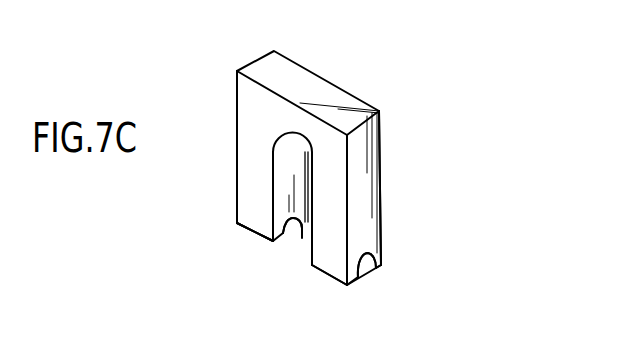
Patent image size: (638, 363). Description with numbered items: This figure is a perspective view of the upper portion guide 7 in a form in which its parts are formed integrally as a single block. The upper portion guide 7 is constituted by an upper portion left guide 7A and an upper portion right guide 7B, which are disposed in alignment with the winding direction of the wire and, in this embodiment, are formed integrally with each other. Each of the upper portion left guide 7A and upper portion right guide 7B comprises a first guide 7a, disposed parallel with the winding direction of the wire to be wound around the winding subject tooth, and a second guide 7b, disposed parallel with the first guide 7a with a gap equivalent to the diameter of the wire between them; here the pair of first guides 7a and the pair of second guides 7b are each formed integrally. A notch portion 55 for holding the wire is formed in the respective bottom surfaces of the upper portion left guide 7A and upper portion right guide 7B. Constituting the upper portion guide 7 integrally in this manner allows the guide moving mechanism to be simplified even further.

The upper portion guide 7 is at (345, 68).
The upper portion left guide 7A is at (248, 122).
The upper portion right guide 7B is at (383, 183).
The first guide 7a is at (302, 228).
The second guide 7b is at (260, 237).
The notch portion 55 is at (292, 222).